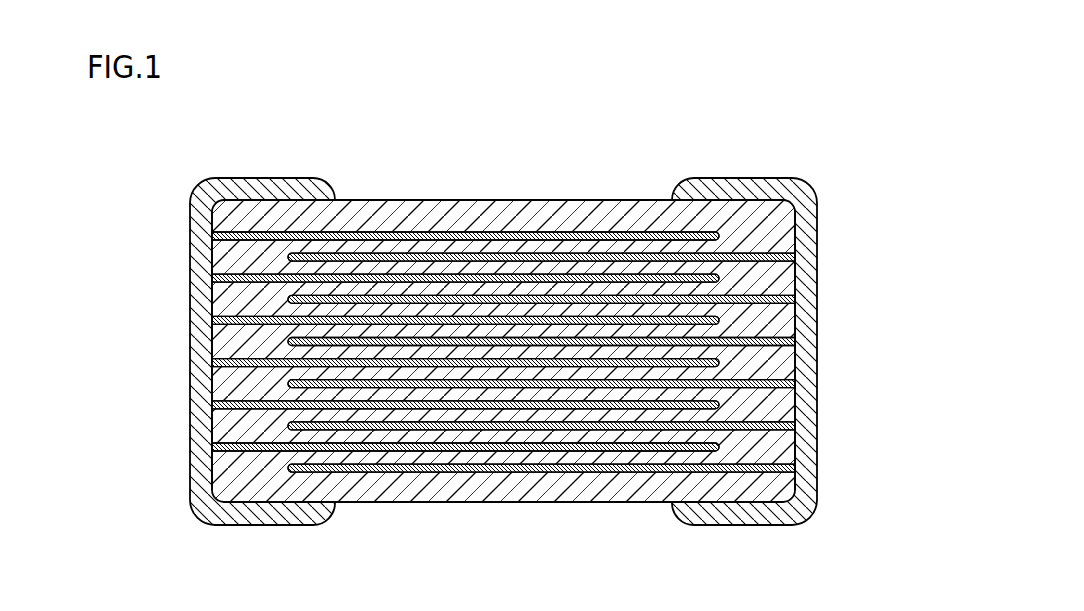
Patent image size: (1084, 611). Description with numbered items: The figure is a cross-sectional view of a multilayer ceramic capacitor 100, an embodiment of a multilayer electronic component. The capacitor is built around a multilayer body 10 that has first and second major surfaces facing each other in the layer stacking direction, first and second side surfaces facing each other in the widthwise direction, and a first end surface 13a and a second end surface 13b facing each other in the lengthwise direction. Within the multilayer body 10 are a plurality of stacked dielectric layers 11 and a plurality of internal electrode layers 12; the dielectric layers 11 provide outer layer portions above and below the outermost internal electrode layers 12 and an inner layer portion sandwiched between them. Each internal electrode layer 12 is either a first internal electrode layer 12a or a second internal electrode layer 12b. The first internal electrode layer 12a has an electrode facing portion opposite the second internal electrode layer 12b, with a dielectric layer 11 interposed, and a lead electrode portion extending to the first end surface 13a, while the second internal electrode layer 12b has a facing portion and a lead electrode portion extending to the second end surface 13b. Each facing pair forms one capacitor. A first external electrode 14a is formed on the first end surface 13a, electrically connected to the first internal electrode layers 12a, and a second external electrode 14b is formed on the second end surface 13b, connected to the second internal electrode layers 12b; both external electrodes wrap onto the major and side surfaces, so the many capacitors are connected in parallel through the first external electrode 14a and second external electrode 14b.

The multilayer ceramic capacitor 100 is at (912, 131).
The multilayer body 10 is at (503, 296).
The dielectric layer 11 is at (605, 245).
The internal electrode layer 12 is at (503, 281).
The first internal electrode layer 12a is at (460, 234).
The second internal electrode layer 12b is at (406, 254).
The first end surface 13a is at (212, 376).
The second end surface 13b is at (797, 376).
The first external electrode 14a is at (198, 308).
The second external electrode 14b is at (808, 307).